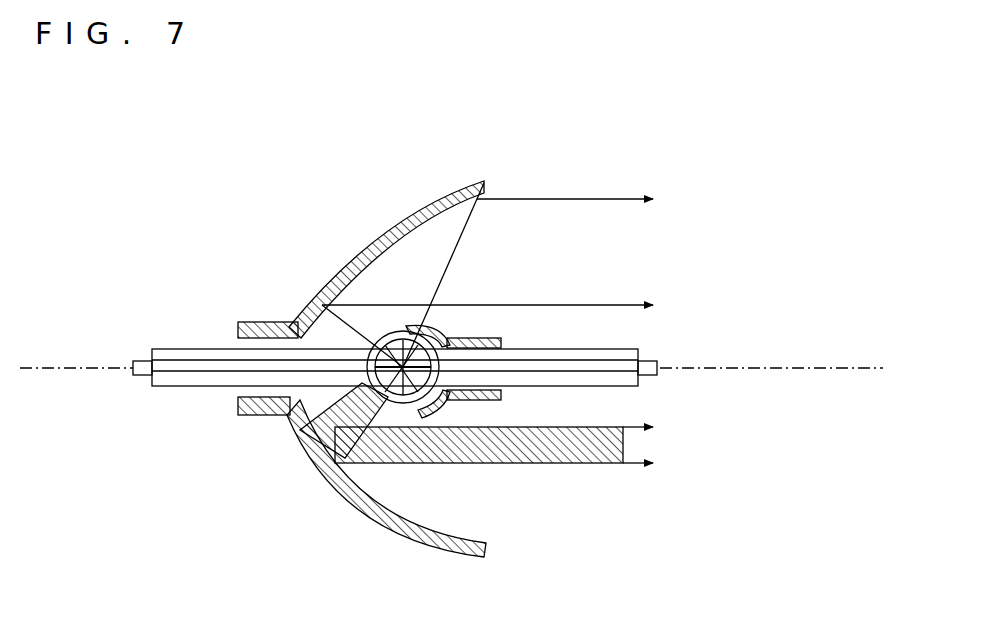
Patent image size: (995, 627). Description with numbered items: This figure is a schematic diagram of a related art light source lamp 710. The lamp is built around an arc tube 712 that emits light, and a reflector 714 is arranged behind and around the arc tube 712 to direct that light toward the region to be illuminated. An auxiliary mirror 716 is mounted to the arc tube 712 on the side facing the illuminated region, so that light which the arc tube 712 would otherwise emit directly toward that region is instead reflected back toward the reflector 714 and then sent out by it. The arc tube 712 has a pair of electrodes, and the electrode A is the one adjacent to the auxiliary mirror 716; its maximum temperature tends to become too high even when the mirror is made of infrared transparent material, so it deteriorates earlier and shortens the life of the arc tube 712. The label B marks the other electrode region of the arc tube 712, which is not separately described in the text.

The light source lamp 710 is at (451, 320).
The arc tube 712 is at (398, 330).
The reflector 714 is at (363, 250).
The auxiliary mirror 716 is at (447, 328).
The electrode A is at (433, 428).
The light flux B is at (378, 445).